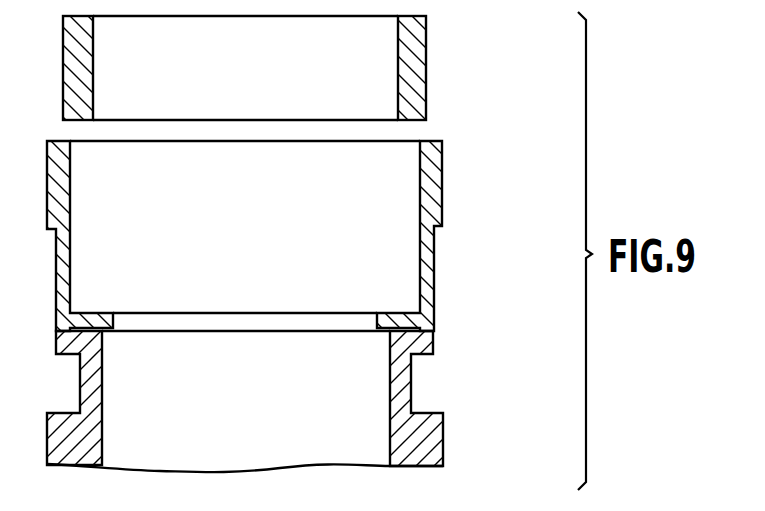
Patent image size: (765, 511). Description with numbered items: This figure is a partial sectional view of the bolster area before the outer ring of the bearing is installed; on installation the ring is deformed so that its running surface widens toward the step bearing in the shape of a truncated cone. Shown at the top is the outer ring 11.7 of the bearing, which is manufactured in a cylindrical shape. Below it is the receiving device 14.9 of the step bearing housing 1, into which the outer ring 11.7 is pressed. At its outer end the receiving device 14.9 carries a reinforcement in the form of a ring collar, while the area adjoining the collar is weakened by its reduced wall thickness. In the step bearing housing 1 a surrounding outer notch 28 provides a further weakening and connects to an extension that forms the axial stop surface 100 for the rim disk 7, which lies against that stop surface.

The outer ring 11.7 is at (413, 72).
The receiving device 14.9 is at (432, 212).
The axial stop surface 100 is at (400, 321).
The rim disk 7 is at (372, 316).
The surrounding outer notch 28 is at (425, 388).
The step bearing housing 1 is at (432, 454).